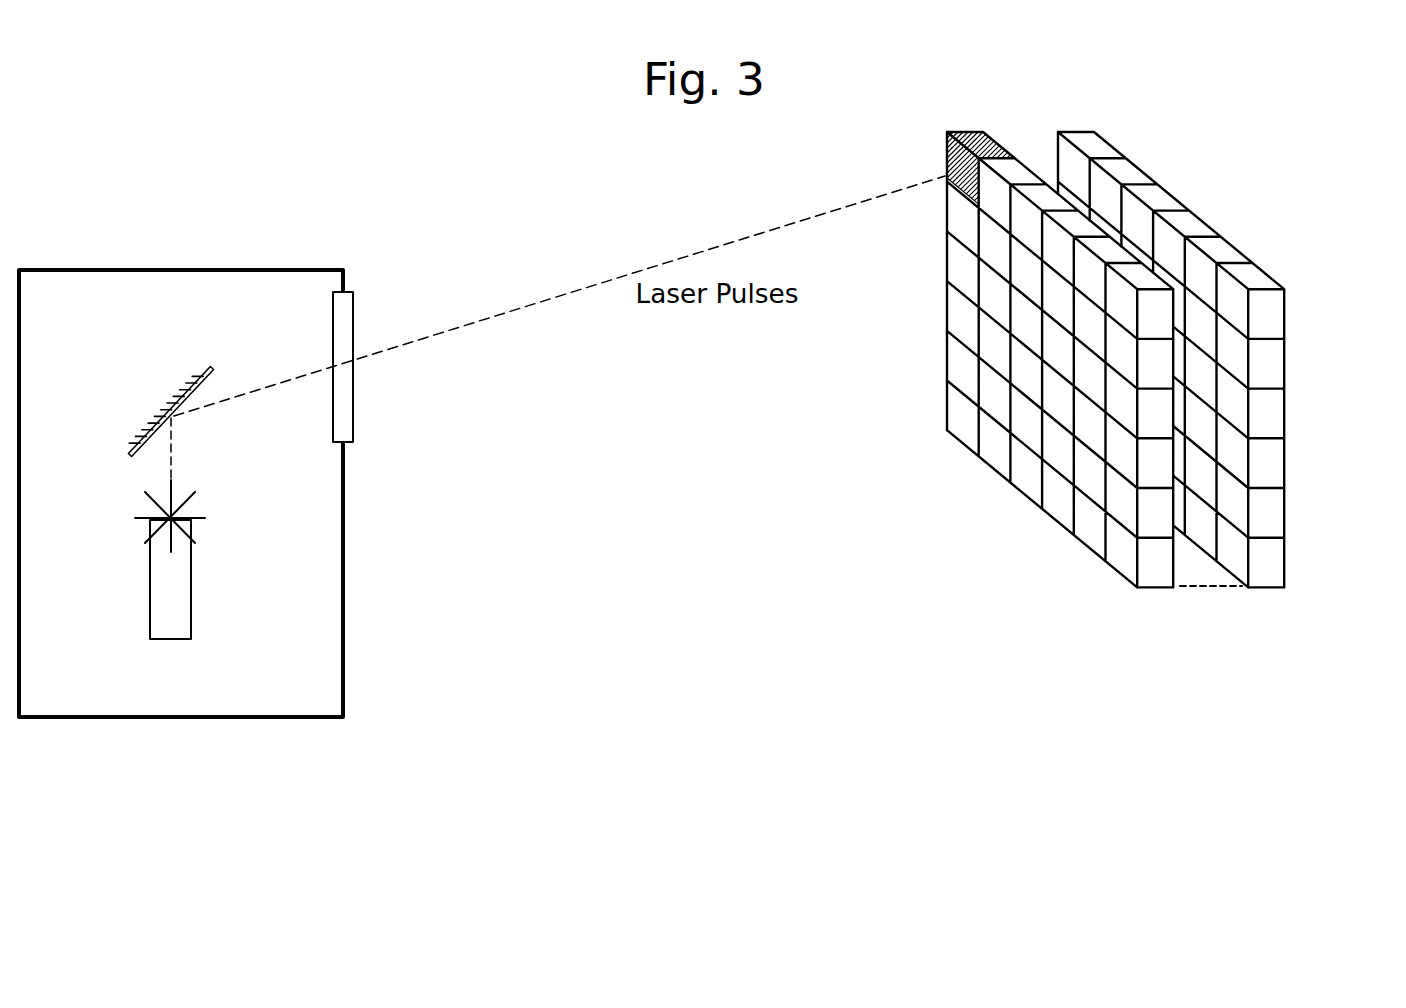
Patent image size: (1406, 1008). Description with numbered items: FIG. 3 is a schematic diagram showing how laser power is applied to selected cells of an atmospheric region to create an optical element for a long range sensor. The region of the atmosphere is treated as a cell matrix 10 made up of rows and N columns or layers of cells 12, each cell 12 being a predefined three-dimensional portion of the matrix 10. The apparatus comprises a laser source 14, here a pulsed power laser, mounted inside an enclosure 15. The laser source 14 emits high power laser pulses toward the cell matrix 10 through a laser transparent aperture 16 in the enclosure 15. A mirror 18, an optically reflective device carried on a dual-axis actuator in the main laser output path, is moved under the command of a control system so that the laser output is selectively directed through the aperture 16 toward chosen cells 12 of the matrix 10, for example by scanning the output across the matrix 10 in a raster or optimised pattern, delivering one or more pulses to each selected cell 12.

The cell matrix 10 is at (1154, 380).
The cell 12 is at (1032, 473).
The laser source 14 is at (178, 592).
The enclosure 15 is at (345, 612).
The laser transparent aperture 16 is at (345, 322).
The mirror 18 is at (182, 390).